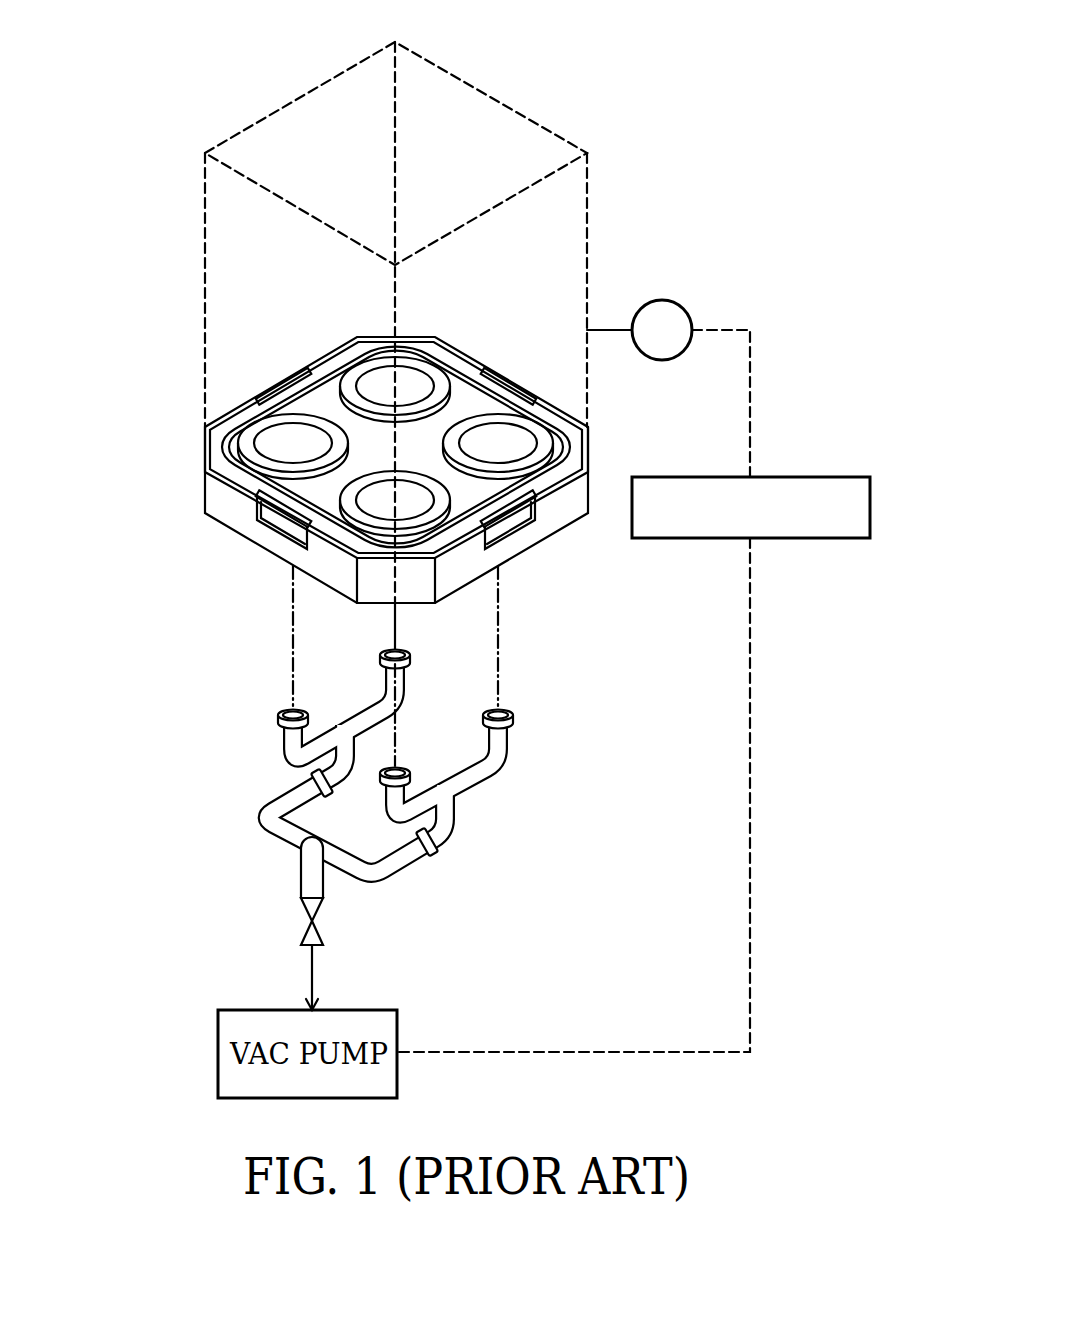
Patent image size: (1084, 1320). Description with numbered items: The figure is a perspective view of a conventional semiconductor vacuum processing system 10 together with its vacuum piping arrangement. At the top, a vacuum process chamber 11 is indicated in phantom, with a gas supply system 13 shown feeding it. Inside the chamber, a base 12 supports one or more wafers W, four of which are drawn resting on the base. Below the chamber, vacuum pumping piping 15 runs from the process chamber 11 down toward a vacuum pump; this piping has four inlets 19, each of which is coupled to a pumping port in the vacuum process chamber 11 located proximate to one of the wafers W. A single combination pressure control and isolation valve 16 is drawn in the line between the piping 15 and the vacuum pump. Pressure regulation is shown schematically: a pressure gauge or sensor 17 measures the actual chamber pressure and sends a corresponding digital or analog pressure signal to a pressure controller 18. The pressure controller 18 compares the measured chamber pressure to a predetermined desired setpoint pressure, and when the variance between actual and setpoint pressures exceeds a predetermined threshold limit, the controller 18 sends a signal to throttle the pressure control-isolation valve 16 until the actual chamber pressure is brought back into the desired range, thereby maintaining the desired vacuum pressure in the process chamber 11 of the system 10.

The vacuum processing system 10 is at (227, 78).
The vacuum process chamber 11 is at (618, 213).
The base 12 is at (476, 404).
The gas supply system 13 is at (202, 312).
The wafer W is at (275, 445).
The vacuum pumping piping 15 is at (483, 803).
The valve 16 is at (292, 918).
The pressure gauge 17 is at (690, 297).
The pressure controller 18 is at (810, 477).
The inlets 19 is at (282, 705).